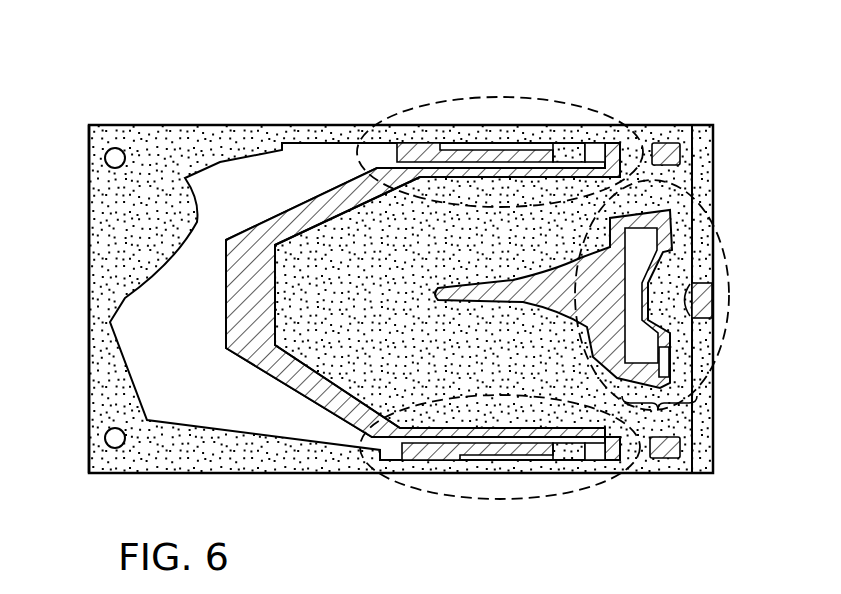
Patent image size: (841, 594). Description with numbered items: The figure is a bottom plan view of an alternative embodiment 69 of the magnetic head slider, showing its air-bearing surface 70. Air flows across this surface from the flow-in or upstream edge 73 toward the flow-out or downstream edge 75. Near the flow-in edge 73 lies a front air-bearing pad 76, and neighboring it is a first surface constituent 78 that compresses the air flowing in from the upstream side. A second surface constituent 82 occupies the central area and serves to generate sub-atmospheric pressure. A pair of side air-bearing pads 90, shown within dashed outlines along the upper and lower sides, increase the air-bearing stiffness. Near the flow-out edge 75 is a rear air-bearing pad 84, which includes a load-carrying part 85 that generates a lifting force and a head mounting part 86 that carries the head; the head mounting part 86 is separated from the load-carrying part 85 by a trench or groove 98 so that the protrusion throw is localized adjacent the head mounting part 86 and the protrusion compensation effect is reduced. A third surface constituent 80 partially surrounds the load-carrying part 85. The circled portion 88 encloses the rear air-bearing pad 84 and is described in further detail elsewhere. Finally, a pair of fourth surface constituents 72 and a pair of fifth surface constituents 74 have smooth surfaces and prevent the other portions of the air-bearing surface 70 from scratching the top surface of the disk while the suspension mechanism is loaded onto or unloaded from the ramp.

The alternative embodiment of the magnetic head slider 69 is at (410, 297).
The air-bearing surface 70 is at (121, 129).
The fourth surface constituents 72 is at (112, 160).
The flow-in edge 73 is at (95, 333).
The fifth surface constituents 74 is at (661, 143).
The flow-out edge 75 is at (712, 449).
The front air-bearing pad 76 is at (186, 377).
The first surface constituent 78 is at (338, 402).
The third surface constituent 80 is at (532, 304).
The second surface constituent 82 is at (343, 307).
The rear air-bearing pad 84 is at (659, 419).
The load-carrying part 85 is at (655, 257).
The head mounting part 86 is at (700, 303).
The circled portion 88 is at (728, 222).
The side air-bearing pads 90 is at (503, 97).
The trench 98 is at (706, 361).